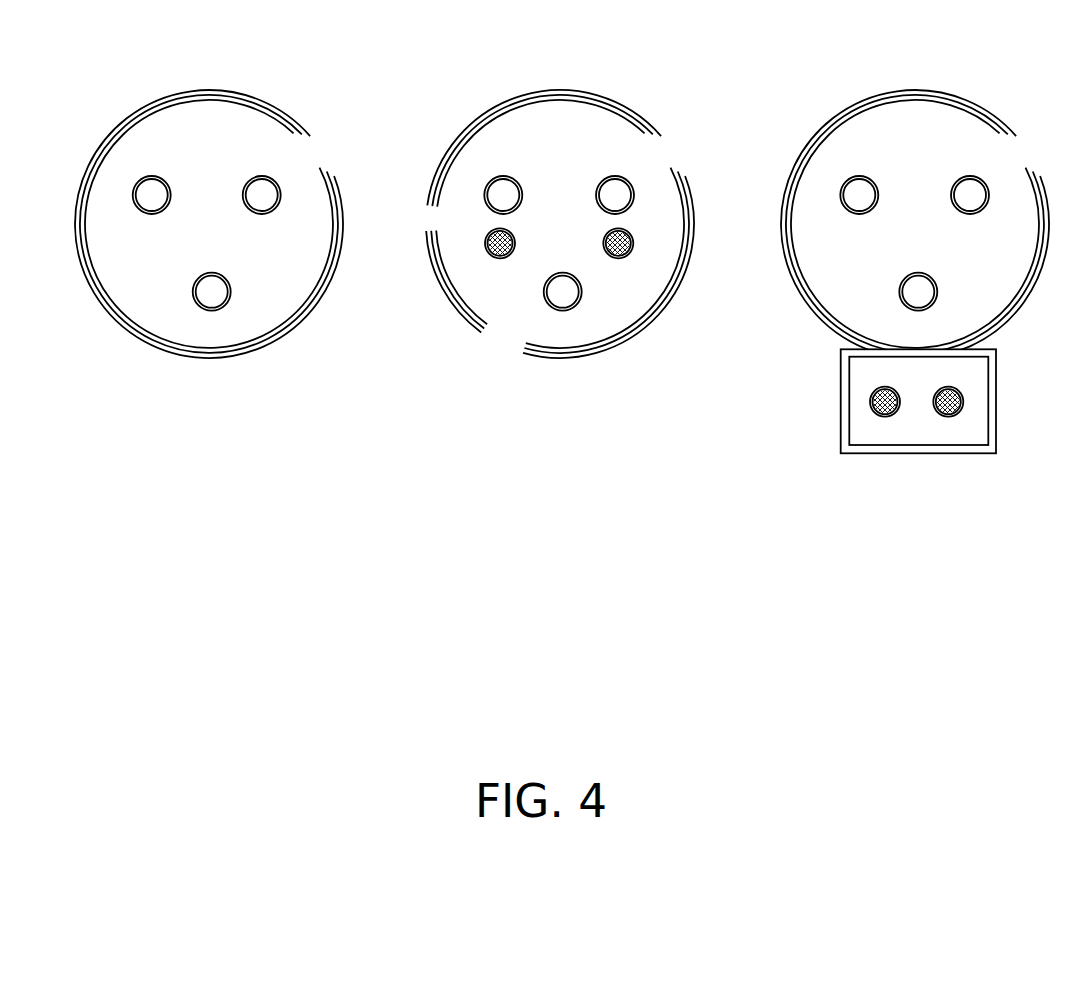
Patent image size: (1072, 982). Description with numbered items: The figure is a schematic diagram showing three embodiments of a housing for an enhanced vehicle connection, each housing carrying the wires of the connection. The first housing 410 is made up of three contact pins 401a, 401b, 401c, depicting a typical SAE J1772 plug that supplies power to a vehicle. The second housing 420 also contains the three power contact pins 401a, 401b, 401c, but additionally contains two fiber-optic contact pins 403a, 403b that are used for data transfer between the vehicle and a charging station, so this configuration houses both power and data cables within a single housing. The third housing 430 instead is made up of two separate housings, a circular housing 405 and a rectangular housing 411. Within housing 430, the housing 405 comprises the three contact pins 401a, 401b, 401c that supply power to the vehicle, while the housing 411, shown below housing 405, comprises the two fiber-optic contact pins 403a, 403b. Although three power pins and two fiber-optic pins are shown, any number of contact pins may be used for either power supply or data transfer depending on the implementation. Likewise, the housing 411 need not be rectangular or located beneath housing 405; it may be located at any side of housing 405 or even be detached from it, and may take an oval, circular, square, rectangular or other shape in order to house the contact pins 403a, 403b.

The housing 410 is at (97, 78).
The housing 420 is at (463, 78).
The housing 430 is at (898, 205).
The housing 405 is at (962, 97).
The housing 411 is at (917, 455).
The contact pin 401a is at (158, 177).
The contact pin 401b is at (267, 177).
The contact pin 401c is at (218, 274).
The fiber-optic contact pin 403a is at (489, 233).
The fiber-optic contact pin 403b is at (607, 233).